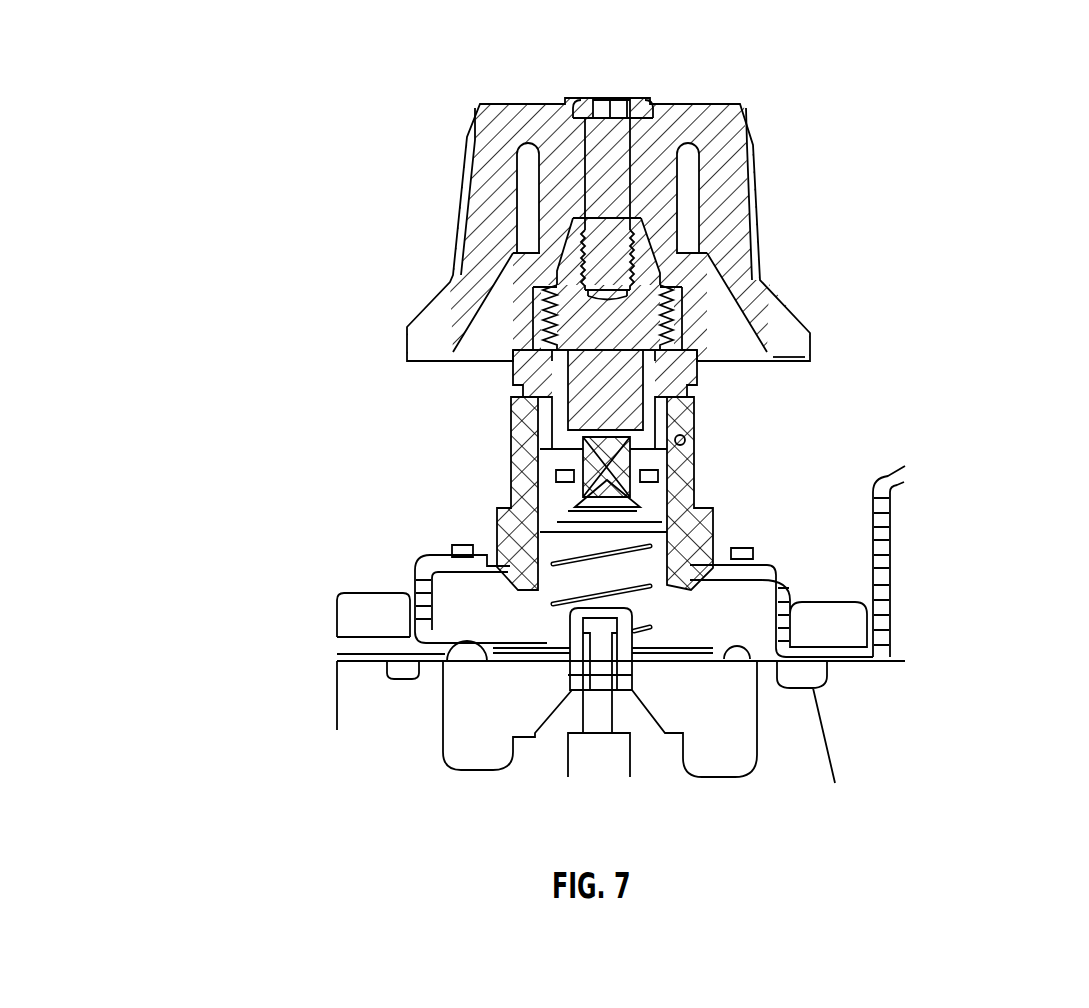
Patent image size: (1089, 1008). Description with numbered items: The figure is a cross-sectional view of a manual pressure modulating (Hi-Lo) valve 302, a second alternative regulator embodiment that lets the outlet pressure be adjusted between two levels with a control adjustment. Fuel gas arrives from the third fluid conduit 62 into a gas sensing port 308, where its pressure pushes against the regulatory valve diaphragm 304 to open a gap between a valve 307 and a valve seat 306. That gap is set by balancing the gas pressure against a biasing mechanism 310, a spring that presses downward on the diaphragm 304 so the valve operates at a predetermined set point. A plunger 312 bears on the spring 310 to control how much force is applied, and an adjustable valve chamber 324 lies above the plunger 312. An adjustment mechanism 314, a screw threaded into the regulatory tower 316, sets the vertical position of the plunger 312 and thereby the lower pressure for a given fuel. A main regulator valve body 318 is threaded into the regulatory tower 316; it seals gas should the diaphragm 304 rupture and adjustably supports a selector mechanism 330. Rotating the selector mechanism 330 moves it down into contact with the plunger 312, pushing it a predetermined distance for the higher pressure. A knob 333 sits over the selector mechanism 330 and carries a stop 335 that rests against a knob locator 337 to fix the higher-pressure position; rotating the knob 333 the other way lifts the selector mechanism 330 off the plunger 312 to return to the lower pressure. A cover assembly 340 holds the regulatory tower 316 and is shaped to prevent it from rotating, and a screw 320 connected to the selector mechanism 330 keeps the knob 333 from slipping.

The manual pressure modulating (Hi-Lo) valve 302 is at (622, 438).
The knob 333 is at (722, 160).
The screw 320 is at (648, 108).
The selector mechanism 330 is at (608, 345).
The stop 335 is at (807, 360).
The main regulator valve body 318 is at (518, 370).
The adjustment mechanism 314 is at (528, 484).
The regulatory tower 316 is at (697, 423).
The plunger 312 is at (607, 473).
The adjustable valve chamber 324 is at (556, 457).
The biasing mechanism 310 is at (657, 545).
The knob locator 337 is at (753, 557).
The cover assembly 340 is at (787, 590).
The regulatory valve diaphragm 304 is at (712, 650).
The gas sensing port 308 is at (719, 717).
The valve 307 is at (603, 670).
The valve seat 306 is at (637, 708).
The third fluid conduit 62 is at (604, 749).